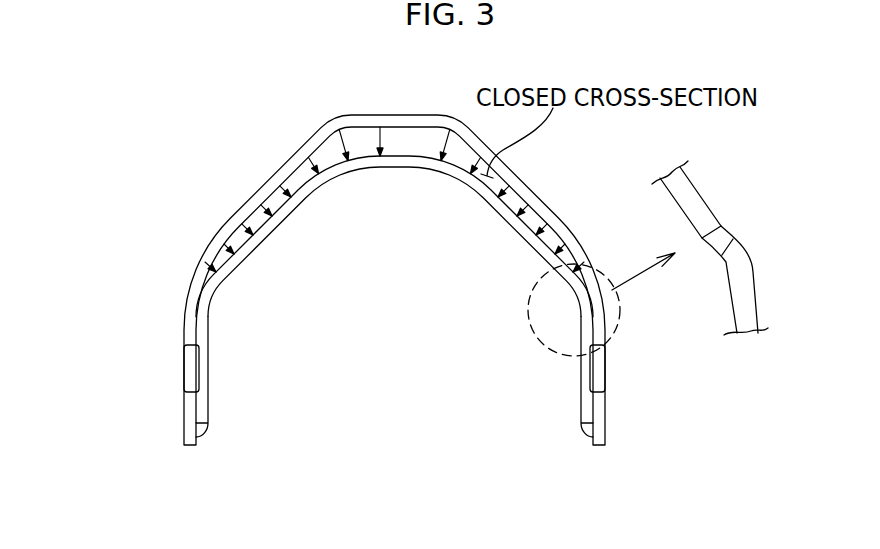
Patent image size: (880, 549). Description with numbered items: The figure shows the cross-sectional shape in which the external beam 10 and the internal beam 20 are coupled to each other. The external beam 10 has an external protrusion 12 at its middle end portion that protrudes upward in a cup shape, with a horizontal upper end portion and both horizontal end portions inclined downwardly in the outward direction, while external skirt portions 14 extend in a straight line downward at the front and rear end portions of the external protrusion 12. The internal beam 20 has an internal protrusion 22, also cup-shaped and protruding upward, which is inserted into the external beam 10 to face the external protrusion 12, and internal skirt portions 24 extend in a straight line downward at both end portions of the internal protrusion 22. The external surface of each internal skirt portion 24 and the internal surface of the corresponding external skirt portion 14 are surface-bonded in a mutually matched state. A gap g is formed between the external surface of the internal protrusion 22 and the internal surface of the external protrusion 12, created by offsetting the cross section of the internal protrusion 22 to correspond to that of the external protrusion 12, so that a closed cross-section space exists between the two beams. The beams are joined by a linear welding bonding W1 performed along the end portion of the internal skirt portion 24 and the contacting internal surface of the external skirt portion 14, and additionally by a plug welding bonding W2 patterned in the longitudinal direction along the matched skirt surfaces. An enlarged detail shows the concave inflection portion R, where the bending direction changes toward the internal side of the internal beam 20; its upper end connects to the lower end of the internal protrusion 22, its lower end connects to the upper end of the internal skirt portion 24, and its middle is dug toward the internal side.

The external beam 10 is at (102, 248).
The external protrusion 12 is at (247, 203).
The external skirt portion 14 is at (188, 402).
The internal beam 20 is at (360, 288).
The internal protrusion 22 is at (278, 228).
The internal skirt portion 24 is at (205, 357).
The inflection portion R is at (723, 234).
The linear welding bonding W1 is at (202, 435).
The plug welding bonding W2 is at (190, 378).
The gap g is at (403, 178).